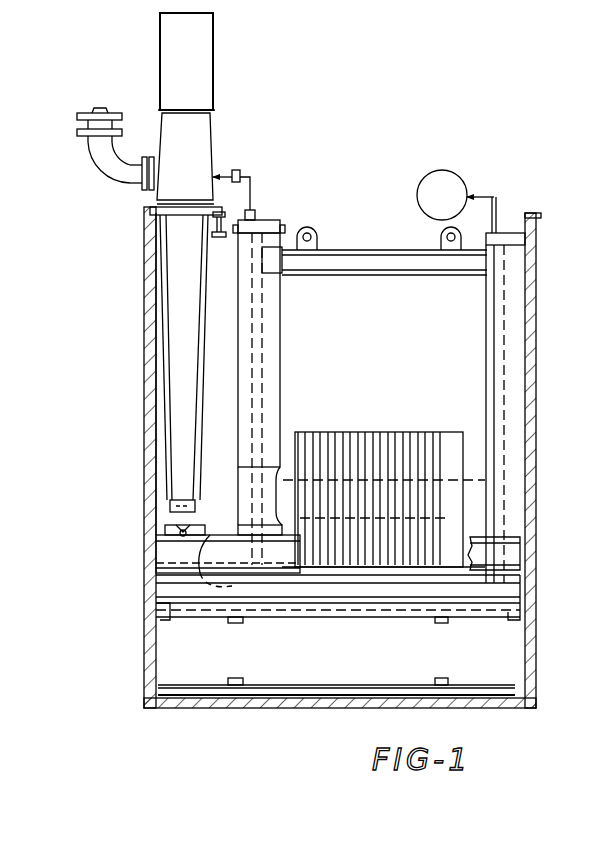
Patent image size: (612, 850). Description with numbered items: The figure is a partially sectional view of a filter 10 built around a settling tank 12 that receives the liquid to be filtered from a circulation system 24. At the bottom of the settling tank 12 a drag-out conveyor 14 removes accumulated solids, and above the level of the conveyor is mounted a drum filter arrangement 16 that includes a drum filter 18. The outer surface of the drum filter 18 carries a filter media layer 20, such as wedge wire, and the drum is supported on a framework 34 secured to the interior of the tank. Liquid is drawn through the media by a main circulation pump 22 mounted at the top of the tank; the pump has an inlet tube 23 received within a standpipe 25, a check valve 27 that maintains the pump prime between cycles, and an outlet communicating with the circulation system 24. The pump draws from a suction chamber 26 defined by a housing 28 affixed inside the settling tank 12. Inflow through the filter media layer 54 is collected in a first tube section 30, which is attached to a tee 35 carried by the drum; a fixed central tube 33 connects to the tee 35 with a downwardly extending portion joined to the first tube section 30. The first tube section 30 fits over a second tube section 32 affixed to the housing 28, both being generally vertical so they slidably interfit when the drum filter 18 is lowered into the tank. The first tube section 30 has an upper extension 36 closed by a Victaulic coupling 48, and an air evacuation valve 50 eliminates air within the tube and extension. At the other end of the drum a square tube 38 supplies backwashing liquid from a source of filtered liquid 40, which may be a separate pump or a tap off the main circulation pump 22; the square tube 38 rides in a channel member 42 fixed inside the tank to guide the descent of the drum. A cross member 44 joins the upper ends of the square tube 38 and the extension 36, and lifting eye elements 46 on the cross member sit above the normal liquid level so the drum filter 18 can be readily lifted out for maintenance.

The filter 10 is at (88, 418).
The settling tank 12 is at (147, 325).
The drag-out conveyor 14 is at (193, 612).
The drum filter arrangement 16 is at (312, 218).
The drum filter 18 is at (360, 380).
The filter media layer 20 is at (437, 400).
The main circulation pump 22 is at (270, 50).
The inlet tube 23 is at (178, 270).
The circulation system 24 is at (92, 165).
The standpipe 25 is at (165, 367).
The suction chamber 26 is at (170, 548).
The check valve 27 is at (183, 530).
The housing 28 is at (207, 535).
The first tube section 30 is at (318, 490).
The second tube section 32 is at (230, 586).
The fixed central tube 33 is at (318, 490).
The framework 34 is at (510, 537).
The tee 35 is at (260, 507).
The upper extension 36 is at (283, 326).
The square tube 38 is at (486, 322).
The source of filtered liquid 40 is at (450, 170).
The channel member 42 is at (508, 235).
The cross member 44 is at (352, 250).
The lifting eye elements 46 is at (315, 226).
The Victaulic coupling 48 is at (255, 212).
The air evacuation valve 50 is at (251, 195).
The filter media layer 54 is at (414, 558).